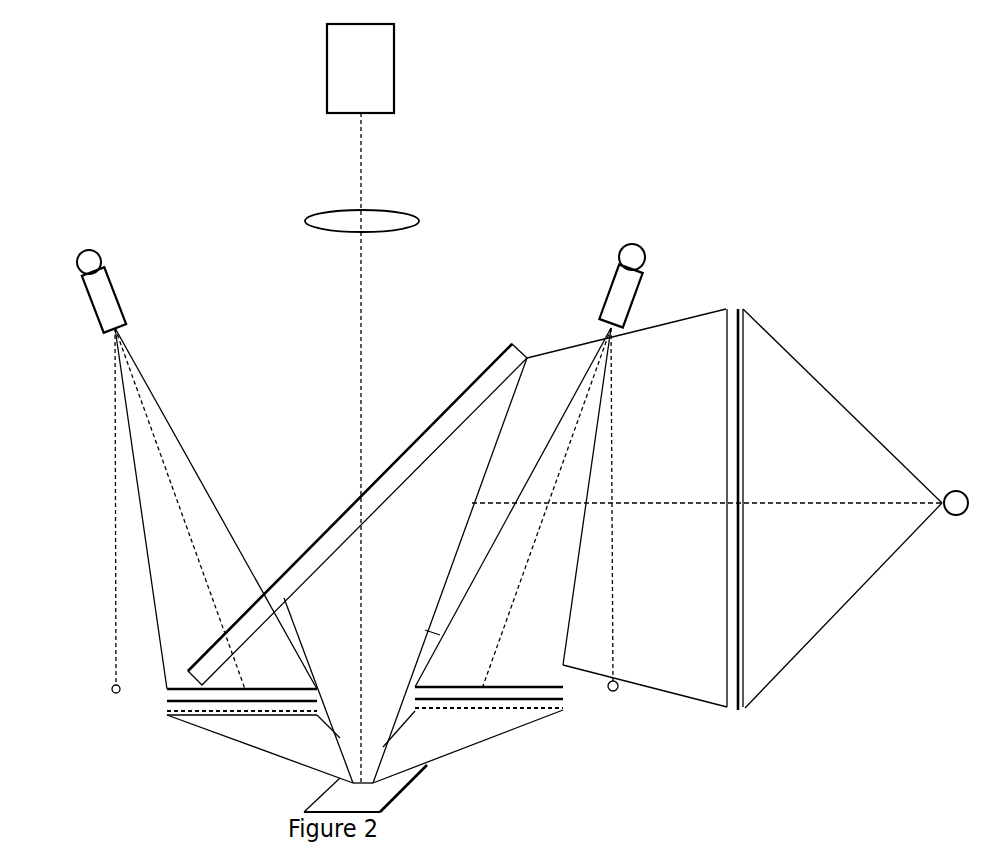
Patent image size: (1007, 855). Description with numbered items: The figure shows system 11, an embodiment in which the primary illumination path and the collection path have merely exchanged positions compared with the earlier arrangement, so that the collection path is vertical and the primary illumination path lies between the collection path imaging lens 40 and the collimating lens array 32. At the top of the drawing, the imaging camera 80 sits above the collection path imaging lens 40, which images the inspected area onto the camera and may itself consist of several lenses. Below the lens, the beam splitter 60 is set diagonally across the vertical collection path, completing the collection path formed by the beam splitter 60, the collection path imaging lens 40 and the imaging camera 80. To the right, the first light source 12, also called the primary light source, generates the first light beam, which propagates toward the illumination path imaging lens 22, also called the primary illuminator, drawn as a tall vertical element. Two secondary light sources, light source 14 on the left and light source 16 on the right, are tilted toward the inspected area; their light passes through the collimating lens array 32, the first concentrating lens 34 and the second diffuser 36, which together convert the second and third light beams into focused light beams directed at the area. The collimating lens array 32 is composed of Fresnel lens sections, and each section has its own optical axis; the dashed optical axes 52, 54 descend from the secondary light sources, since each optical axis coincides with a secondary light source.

The system 11 is at (113, 807).
The first light source 12 is at (968, 500).
The light source 14 is at (60, 311).
The light source 16 is at (658, 223).
The illumination path imaging lens 22 is at (737, 706).
The collimating lens array 32 is at (563, 687).
The first concentrating lens 34 is at (563, 699).
The second diffuser 36 is at (167, 711).
The collection path imaging lens 40 is at (305, 220).
The optical axis 52 is at (121, 688).
The optical axis 54 is at (618, 691).
The beam splitter 60 is at (475, 375).
The imaging camera 80 is at (396, 65).